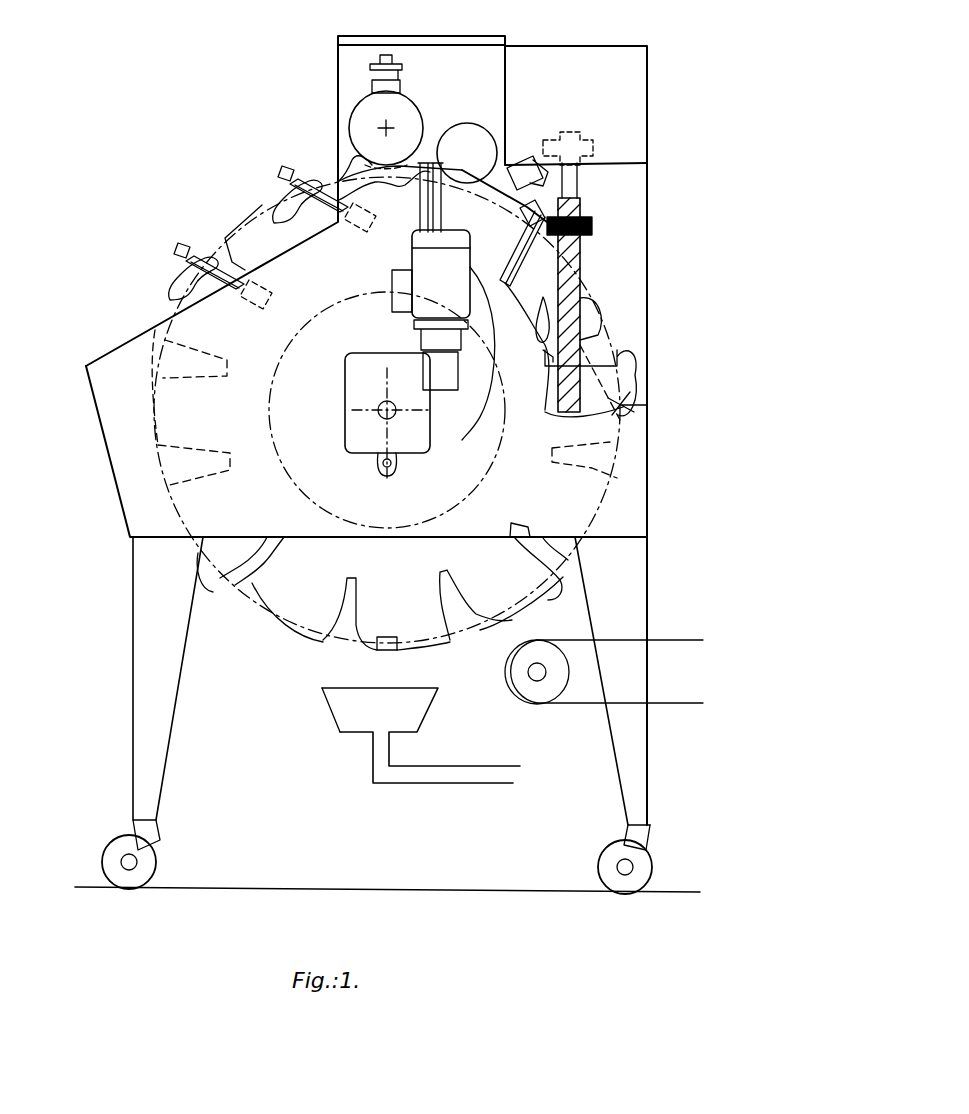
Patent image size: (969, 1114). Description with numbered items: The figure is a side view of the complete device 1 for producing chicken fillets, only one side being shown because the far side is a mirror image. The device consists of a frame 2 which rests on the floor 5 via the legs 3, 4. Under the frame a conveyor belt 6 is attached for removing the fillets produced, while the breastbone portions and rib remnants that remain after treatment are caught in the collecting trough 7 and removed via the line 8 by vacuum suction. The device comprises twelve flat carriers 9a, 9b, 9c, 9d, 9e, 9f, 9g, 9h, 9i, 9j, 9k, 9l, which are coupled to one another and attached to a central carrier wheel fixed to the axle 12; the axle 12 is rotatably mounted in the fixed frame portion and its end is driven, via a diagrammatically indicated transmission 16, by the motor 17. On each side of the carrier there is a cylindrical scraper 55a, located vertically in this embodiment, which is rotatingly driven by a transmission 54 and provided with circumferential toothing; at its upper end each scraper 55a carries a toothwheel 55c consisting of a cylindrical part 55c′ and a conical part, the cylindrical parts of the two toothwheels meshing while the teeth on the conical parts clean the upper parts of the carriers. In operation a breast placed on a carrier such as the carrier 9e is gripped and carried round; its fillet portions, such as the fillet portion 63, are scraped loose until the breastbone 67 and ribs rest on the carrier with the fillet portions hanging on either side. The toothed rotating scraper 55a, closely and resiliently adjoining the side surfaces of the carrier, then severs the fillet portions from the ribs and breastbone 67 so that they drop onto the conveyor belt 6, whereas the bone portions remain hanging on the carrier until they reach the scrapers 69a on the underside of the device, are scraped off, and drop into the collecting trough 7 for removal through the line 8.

The complete device 1 is at (669, 397).
The frame 2 is at (647, 288).
The leg 3 is at (160, 783).
The leg 4 is at (648, 788).
The floor 5 is at (489, 884).
The conveyor belt 6 is at (668, 640).
The collecting trough 7 is at (422, 702).
The line 8 is at (456, 780).
The flat carrier 9a is at (288, 615).
The flat carrier 9b is at (202, 566).
The flat carrier 9c is at (158, 447).
The flat carrier 9d is at (162, 338).
The flat carrier 9e is at (253, 228).
The flat carrier 9f is at (346, 148).
The flat carrier 9g is at (483, 212).
The flat carrier 9h is at (585, 292).
The flat carrier 9i is at (625, 413).
The flat carrier 9j is at (600, 505).
The flat carrier 9k is at (532, 600).
The flat carrier 9l is at (440, 638).
The axle 12 is at (394, 415).
The transmission 16 is at (352, 455).
The motor 17 is at (462, 310).
The transmission 54 is at (592, 150).
The cylindrical scraper 55a is at (582, 298).
The toothwheel 55c is at (600, 218).
The cylindrical part 55c′ is at (609, 221).
The fillet portion 63 is at (500, 335).
The breastbone 67 is at (627, 363).
The scraper 69a is at (377, 650).